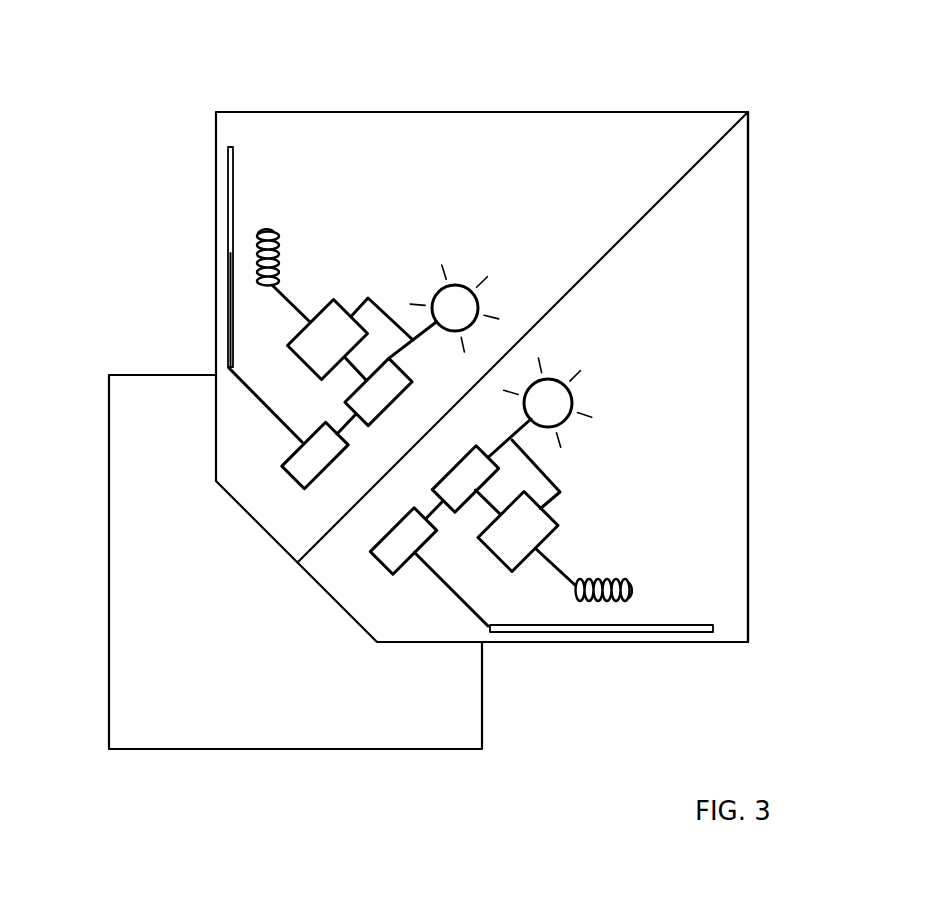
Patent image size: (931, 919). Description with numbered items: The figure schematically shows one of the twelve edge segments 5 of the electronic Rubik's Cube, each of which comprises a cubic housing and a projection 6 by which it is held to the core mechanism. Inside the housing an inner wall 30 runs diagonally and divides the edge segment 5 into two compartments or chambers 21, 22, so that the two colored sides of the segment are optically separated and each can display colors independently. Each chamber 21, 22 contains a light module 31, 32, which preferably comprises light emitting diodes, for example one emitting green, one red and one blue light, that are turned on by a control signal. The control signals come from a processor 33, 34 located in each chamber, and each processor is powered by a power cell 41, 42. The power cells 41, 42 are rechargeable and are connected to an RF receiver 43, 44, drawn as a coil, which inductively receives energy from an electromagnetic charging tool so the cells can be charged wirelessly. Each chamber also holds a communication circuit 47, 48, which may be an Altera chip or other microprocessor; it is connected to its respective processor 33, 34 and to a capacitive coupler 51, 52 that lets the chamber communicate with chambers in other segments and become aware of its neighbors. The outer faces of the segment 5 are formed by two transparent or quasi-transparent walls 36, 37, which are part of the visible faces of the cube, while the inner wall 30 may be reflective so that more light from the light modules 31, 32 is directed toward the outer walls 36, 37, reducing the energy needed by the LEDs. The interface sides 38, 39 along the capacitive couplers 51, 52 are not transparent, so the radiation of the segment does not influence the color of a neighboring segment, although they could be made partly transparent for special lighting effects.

The edge segment 5 is at (256, 92).
The projection 6 is at (109, 585).
The chamber 21 is at (430, 143).
The chamber 22 is at (723, 410).
The inner wall 30 is at (710, 152).
The light module 31 is at (453, 300).
The light module 32 is at (550, 395).
The processor 33 is at (385, 400).
The processor 34 is at (460, 473).
The transparent wall 36 is at (520, 110).
The transparent wall 37 is at (748, 353).
The interface side 38 is at (217, 180).
The interface side 39 is at (675, 643).
The power cell 41 is at (335, 315).
The power cell 42 is at (542, 523).
The RF receiver 43 is at (278, 240).
The RF receiver 44 is at (615, 578).
The communication circuit 47 is at (305, 458).
The communication circuit 48 is at (395, 553).
The capacitive coupler 51 is at (230, 247).
The capacitive coupler 52 is at (597, 630).